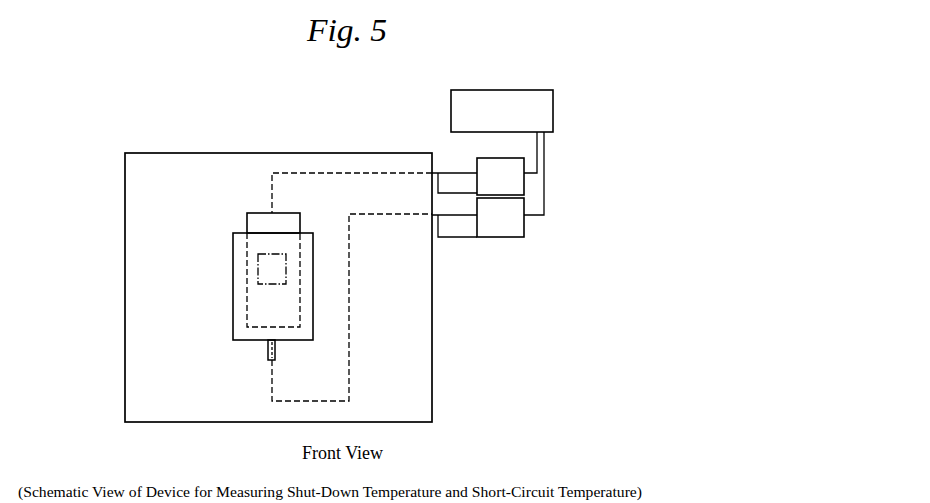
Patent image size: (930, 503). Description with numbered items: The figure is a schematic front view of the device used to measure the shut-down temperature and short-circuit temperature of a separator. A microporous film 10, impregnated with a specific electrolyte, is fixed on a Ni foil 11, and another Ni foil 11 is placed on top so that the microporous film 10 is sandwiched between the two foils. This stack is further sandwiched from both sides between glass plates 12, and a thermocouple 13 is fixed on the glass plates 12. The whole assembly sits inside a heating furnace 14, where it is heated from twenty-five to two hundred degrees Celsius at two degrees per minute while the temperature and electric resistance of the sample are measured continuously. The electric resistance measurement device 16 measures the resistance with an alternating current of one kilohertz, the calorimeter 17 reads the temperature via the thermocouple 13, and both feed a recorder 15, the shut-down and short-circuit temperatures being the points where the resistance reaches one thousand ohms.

The microporous film 10 is at (258, 277).
The Ni foil 11 is at (245, 222).
The glass plate 12 is at (232, 242).
The thermocouple 13 is at (268, 352).
The heating furnace 14 is at (432, 341).
The recorder 15 is at (544, 108).
The electric resistance measurement device 16 is at (517, 183).
The calorimeter 17 is at (517, 225).